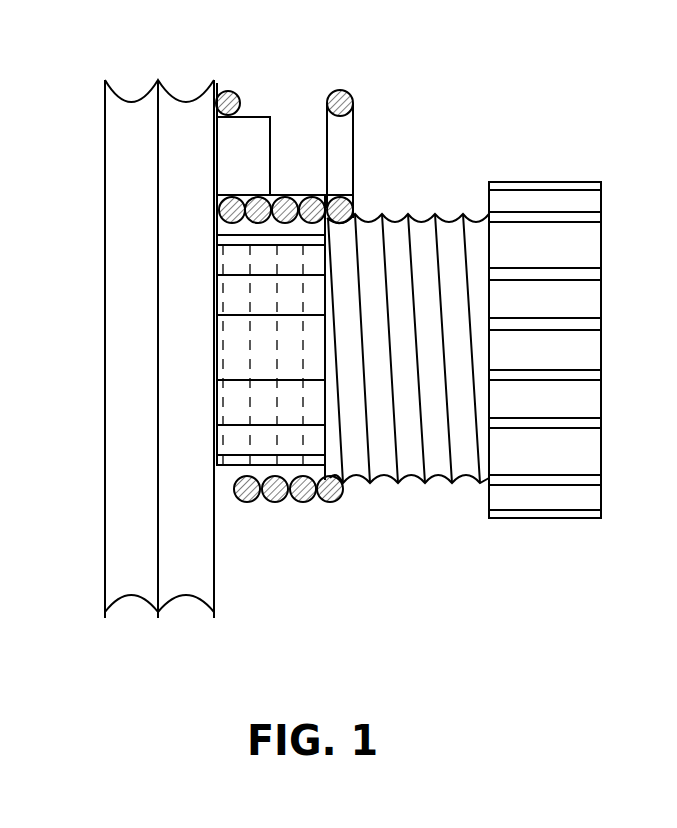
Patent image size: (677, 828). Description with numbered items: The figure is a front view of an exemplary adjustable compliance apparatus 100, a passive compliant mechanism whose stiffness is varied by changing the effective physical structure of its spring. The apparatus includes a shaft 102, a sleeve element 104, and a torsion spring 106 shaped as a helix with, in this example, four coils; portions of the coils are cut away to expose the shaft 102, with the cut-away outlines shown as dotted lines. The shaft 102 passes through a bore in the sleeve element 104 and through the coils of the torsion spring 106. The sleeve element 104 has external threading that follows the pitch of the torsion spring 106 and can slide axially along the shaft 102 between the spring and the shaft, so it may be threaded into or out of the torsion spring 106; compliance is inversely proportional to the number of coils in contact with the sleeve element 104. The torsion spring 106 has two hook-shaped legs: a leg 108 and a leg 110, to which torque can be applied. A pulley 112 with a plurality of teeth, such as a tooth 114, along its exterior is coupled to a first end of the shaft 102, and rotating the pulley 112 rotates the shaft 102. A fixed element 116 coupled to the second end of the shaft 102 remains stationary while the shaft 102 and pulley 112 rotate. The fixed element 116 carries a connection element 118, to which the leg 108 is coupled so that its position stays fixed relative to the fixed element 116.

The adjustable compliance apparatus 100 is at (452, 67).
The shaft 102 is at (222, 402).
The sleeve element 104 is at (395, 235).
The torsion spring 106 is at (280, 494).
The leg 108 is at (232, 90).
The leg 110 is at (340, 142).
The pulley 112 is at (563, 295).
The tooth 114 is at (584, 267).
The fixed element 116 is at (190, 140).
The connection element 118 is at (238, 150).